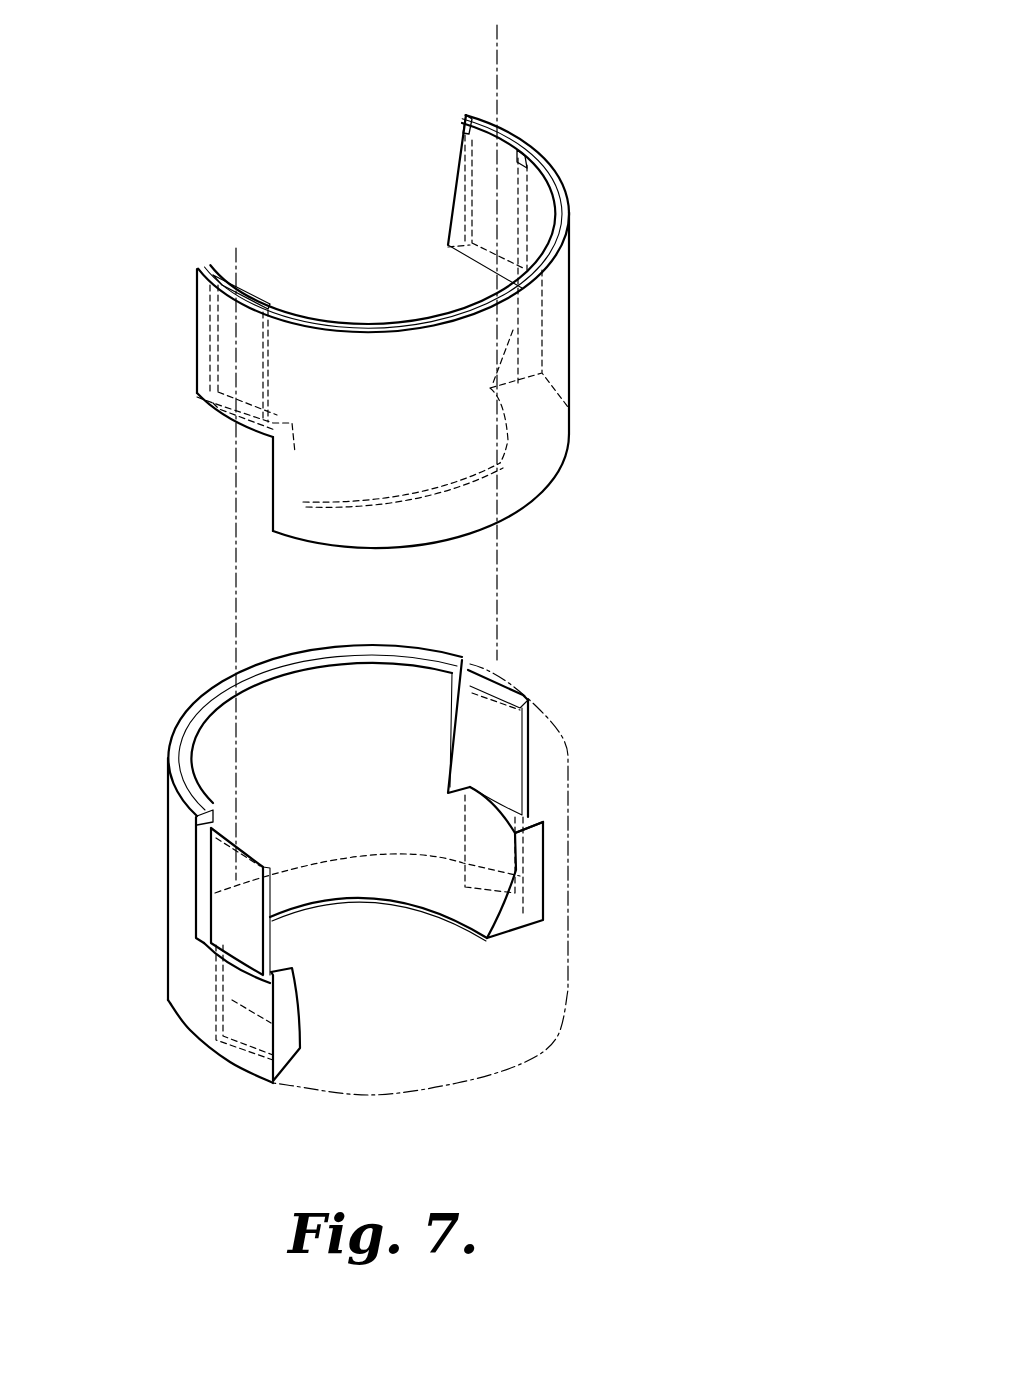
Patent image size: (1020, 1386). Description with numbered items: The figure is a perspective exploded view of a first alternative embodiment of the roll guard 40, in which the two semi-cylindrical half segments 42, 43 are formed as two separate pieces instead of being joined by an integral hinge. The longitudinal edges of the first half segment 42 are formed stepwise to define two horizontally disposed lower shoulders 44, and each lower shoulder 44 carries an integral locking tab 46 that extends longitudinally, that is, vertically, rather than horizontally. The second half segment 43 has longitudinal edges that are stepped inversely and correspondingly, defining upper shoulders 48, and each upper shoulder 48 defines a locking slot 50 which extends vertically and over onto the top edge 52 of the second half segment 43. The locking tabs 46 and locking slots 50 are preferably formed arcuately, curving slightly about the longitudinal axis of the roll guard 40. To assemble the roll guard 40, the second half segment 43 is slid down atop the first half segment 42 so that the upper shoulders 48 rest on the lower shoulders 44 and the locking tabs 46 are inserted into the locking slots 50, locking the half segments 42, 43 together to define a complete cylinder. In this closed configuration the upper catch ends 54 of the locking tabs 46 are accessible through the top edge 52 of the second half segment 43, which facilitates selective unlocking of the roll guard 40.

The roll guard 40 is at (722, 631).
The first half segment 42 is at (162, 837).
The second half segment 43 is at (578, 317).
The lower shoulder 44 is at (533, 823).
The locking tab 46 is at (530, 758).
The upper shoulder 48 is at (487, 258).
The locking slot 50 is at (463, 243).
The top edge 52 is at (557, 177).
The upper catch end 54 is at (508, 693).